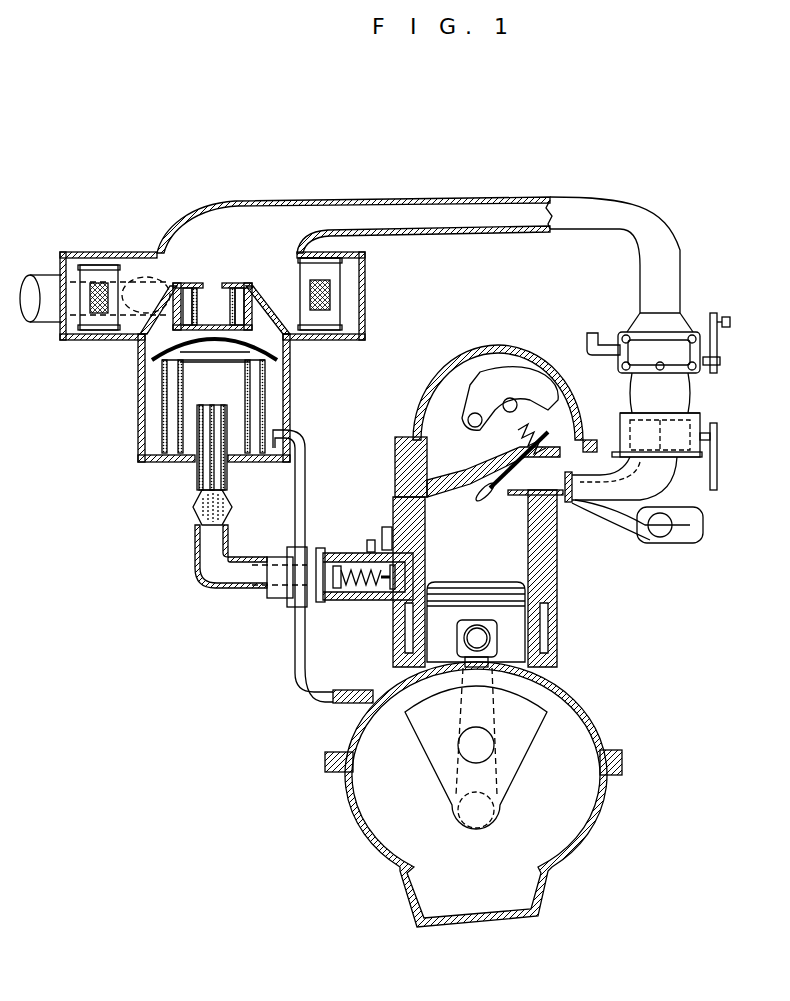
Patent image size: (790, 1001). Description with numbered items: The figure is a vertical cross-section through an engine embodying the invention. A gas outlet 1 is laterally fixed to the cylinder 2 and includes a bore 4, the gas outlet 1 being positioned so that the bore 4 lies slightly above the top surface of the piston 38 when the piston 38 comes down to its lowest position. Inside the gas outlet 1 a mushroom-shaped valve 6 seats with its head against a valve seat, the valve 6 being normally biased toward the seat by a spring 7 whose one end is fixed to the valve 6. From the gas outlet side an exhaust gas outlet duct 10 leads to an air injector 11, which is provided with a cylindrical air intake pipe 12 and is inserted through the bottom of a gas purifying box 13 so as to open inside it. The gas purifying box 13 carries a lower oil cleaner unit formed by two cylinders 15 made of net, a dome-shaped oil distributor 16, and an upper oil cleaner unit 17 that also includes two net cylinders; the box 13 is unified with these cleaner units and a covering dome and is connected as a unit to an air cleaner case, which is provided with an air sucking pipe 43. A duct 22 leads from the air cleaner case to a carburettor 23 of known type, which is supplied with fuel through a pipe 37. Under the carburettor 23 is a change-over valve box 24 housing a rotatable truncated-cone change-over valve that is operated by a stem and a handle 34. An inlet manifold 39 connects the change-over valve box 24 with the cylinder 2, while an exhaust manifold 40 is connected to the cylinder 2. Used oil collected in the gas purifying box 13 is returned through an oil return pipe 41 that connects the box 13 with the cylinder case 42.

The gas outlet 1 is at (350, 553).
The cylinder 2 is at (557, 595).
The bore 4 is at (398, 588).
The mushroom-shaped valve 6 is at (390, 578).
The spring 7 is at (347, 597).
The exhaust gas outlet duct 10 is at (195, 560).
The air injector 11 is at (150, 462).
The cylindrical air intake pipe 12 is at (192, 473).
The gas purifying box 13 is at (138, 425).
The cylinders made of net 15 is at (163, 404).
The dome-shaped oil distributor 16 is at (155, 356).
The upper oil cleaner unit 17 is at (252, 316).
The duct 22 is at (455, 195).
The carburettor 23 is at (625, 330).
The change-over valve box 24 is at (700, 415).
The handle 34 is at (717, 480).
The pipe 37 is at (590, 340).
The piston 38 is at (517, 635).
The inlet manifold 39 is at (650, 485).
The exhaust manifold 40 is at (600, 505).
The oil return pipe 41 is at (295, 500).
The cylinder case 42 is at (345, 726).
The air sucking pipe 43 is at (50, 282).